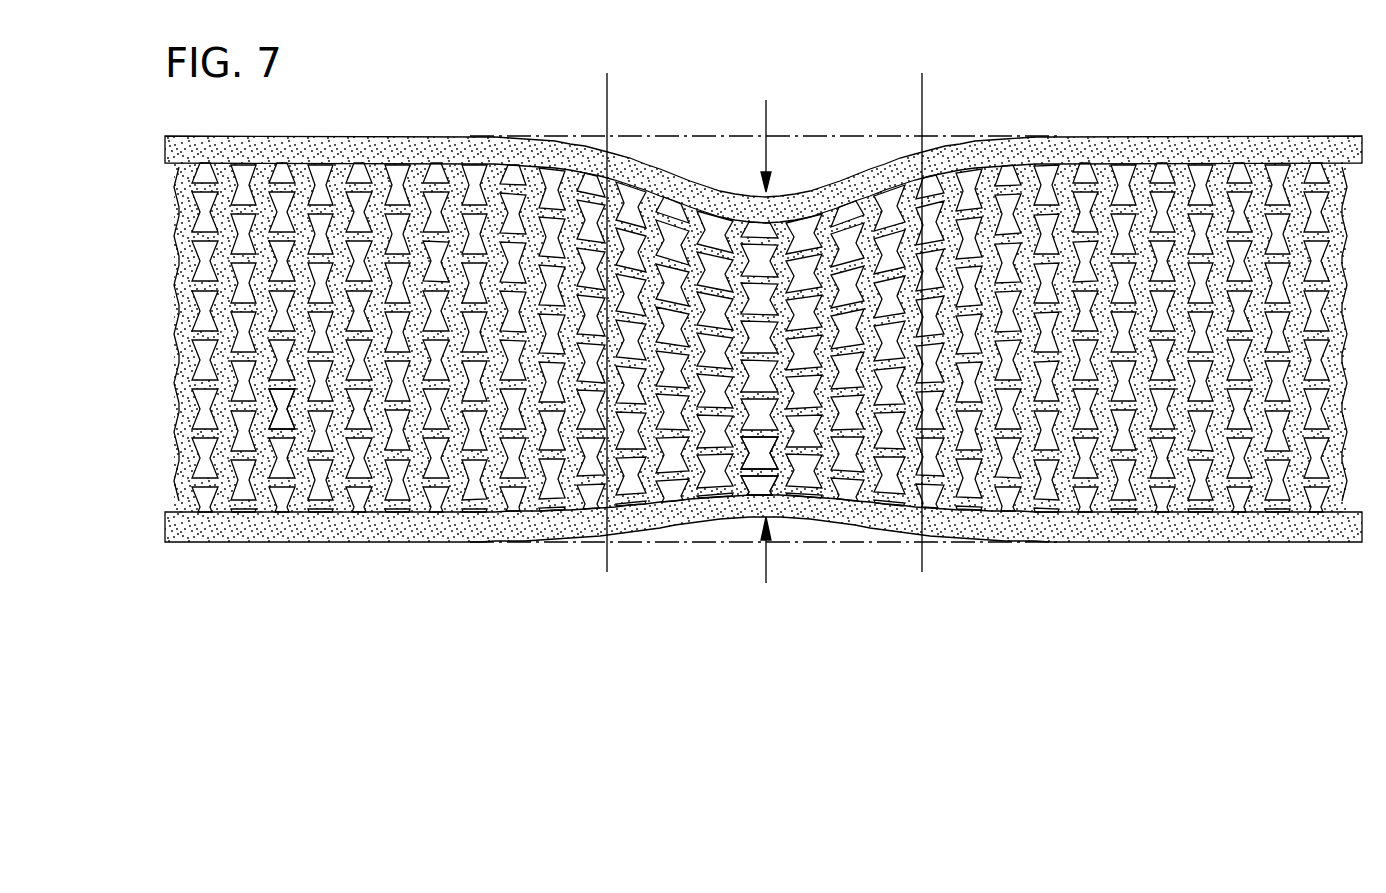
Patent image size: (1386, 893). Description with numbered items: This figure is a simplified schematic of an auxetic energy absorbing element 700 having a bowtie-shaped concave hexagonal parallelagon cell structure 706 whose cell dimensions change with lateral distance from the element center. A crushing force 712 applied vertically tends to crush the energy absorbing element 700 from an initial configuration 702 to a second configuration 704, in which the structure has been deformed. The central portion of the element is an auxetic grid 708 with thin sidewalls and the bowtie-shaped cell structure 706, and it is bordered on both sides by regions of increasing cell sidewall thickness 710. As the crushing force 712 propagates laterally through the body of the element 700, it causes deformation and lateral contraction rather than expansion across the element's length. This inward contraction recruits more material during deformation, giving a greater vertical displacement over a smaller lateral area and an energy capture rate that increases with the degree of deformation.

The auxetic energy absorbing element 700 is at (1118, 95).
The initial configuration 702 is at (878, 136).
The second configuration 704 is at (962, 147).
The bowtie-shaped concave hexagonal parallelagon cell structure 706 is at (503, 433).
The auxetic grid 708 is at (783, 487).
The regions of increasing cell sidewall thickness 710 is at (270, 398).
The crushing force 712 is at (763, 118).